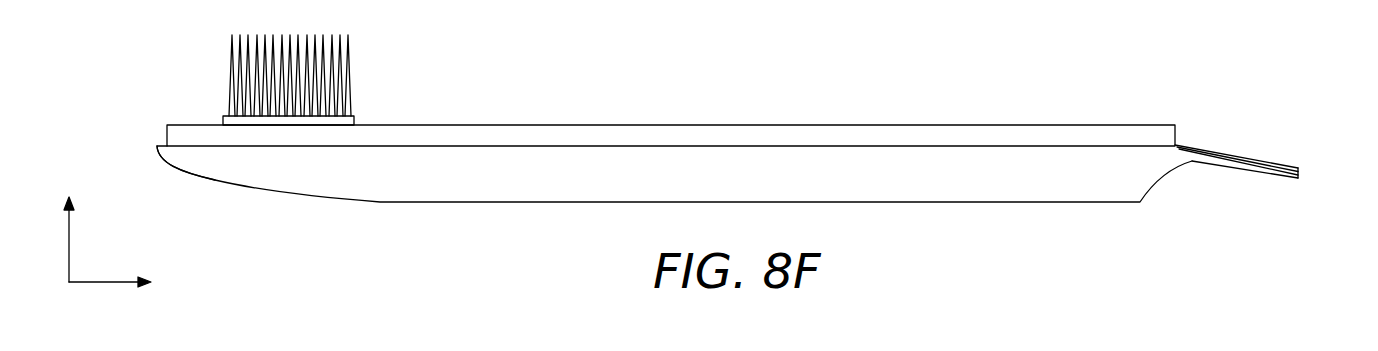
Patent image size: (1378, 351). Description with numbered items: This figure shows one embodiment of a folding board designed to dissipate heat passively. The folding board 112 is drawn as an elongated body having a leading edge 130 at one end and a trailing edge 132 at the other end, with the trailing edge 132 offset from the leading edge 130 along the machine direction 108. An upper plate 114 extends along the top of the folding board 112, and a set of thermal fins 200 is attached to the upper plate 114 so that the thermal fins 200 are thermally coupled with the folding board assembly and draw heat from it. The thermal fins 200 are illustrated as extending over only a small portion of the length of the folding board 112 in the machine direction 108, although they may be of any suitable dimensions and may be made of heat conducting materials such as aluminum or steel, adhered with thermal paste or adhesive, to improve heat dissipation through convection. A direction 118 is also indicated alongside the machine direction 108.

The thermal fins 200 is at (350, 78).
The upper plate 114 is at (573, 125).
The upper folding board 112 is at (383, 202).
The trailing edge 132 is at (1263, 152).
The leading edge 130 is at (204, 174).
The vertical axis direction 118 is at (75, 224).
The machine direction 108 is at (139, 286).